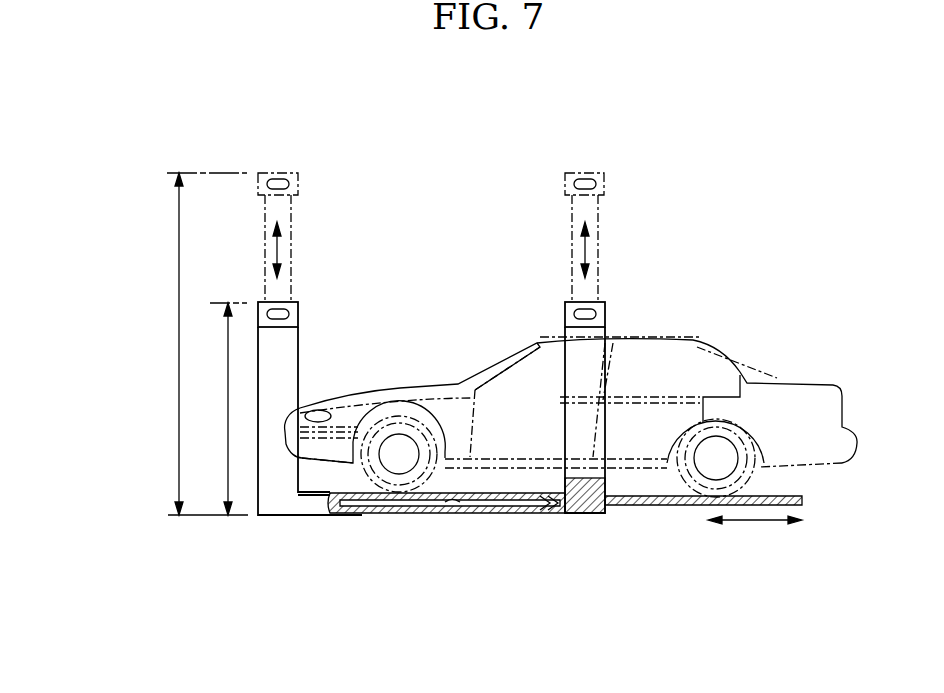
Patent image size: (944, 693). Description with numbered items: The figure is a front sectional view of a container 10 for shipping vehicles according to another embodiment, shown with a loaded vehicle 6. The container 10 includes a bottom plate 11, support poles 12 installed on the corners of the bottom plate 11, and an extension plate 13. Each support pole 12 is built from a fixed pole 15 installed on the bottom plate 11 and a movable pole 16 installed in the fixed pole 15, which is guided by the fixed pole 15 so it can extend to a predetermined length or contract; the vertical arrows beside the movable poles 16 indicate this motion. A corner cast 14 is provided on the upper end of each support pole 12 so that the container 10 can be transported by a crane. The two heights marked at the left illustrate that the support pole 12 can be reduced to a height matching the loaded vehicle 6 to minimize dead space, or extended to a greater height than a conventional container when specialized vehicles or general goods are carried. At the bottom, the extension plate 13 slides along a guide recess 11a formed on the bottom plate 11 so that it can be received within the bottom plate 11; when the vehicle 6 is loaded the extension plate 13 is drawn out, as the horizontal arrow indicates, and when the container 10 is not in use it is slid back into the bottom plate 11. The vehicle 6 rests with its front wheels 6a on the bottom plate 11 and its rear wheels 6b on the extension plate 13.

The container for shipping vehicles 10 is at (463, 228).
The support pole 12 is at (122, 222).
The corner cast 14 is at (298, 309).
The fixed pole 15 is at (258, 352).
The movable pole 16 is at (265, 243).
The bottom plate 11 is at (372, 514).
The guide recess 11a is at (452, 508).
The extension plate 13 is at (650, 507).
The vehicle 6 is at (805, 382).
The front wheel 6a is at (402, 450).
The rear wheel 6b is at (722, 455).